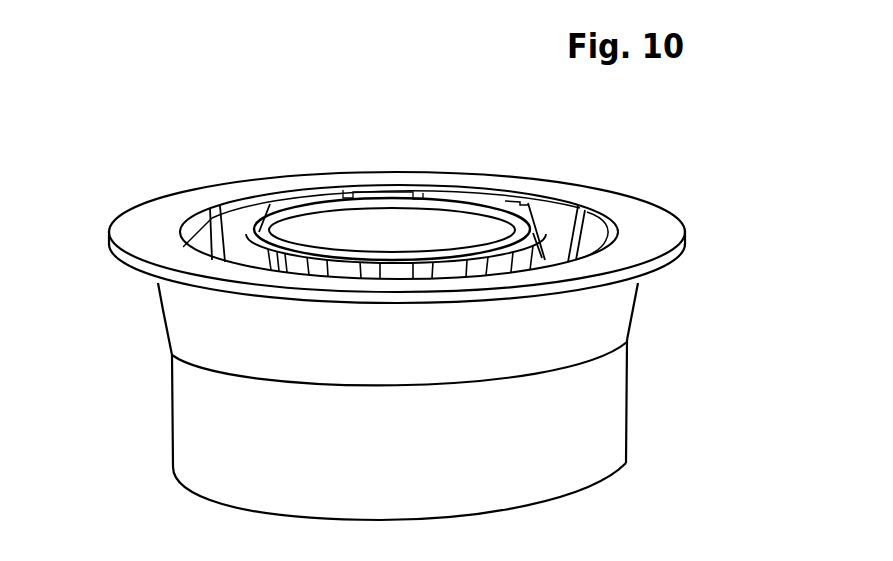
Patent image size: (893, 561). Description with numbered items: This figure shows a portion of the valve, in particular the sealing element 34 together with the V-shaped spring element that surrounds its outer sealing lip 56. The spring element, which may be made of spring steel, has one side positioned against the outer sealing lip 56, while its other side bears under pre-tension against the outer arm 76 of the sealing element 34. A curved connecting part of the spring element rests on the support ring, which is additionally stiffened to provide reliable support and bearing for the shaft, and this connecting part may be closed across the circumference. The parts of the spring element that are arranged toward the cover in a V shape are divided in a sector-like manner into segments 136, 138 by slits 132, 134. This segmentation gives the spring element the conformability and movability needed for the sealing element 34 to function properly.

The sealing element 34 is at (169, 422).
The outer arm 76 is at (205, 315).
The outer sealing lip 56 is at (327, 228).
The slit 132 is at (424, 265).
The slit 134 is at (524, 203).
The segment 136 is at (533, 250).
The segment 138 is at (240, 228).